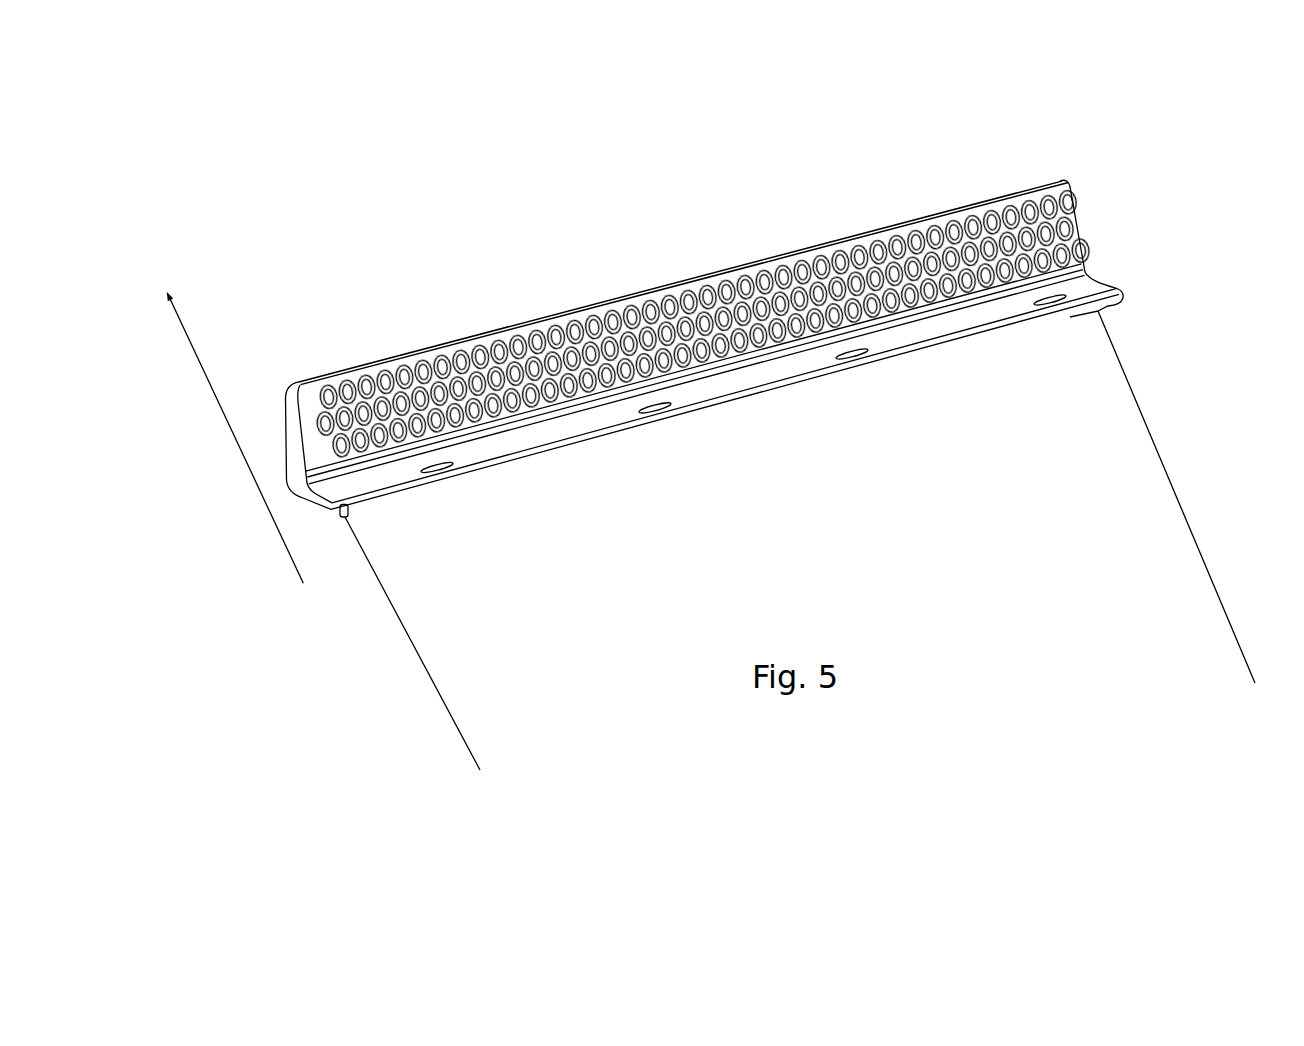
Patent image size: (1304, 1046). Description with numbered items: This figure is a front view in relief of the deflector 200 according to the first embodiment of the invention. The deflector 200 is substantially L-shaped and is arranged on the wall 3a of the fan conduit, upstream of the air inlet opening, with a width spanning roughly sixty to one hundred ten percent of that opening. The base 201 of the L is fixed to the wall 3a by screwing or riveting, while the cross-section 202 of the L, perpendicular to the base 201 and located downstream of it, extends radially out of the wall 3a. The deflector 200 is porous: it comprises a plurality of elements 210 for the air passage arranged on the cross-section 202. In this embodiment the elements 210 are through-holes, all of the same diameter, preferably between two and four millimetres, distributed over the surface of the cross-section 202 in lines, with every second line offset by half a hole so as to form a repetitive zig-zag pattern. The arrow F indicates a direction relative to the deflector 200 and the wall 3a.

The deflector 200 is at (972, 152).
The elements for the air passage 210 is at (1068, 182).
The base 201 is at (1084, 214).
The cross-section 202 is at (1123, 294).
The wall of the fan conduit 3a is at (1150, 498).
The force direction arrow F is at (231, 421).